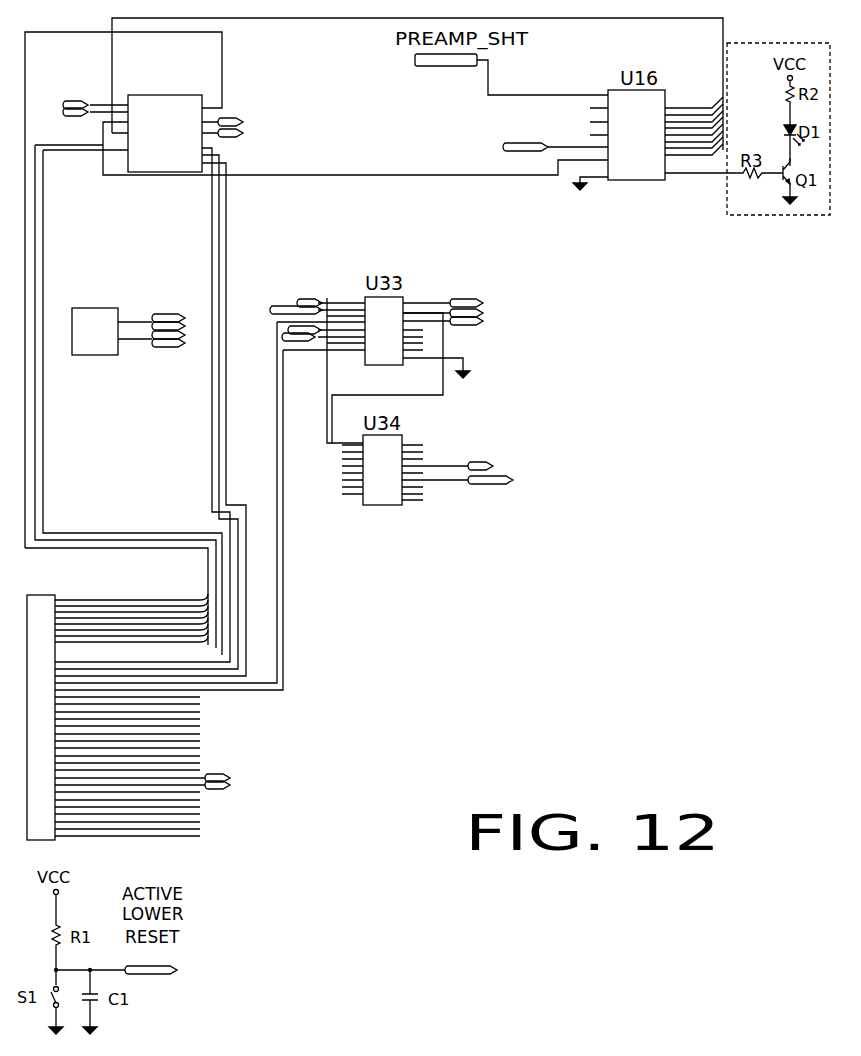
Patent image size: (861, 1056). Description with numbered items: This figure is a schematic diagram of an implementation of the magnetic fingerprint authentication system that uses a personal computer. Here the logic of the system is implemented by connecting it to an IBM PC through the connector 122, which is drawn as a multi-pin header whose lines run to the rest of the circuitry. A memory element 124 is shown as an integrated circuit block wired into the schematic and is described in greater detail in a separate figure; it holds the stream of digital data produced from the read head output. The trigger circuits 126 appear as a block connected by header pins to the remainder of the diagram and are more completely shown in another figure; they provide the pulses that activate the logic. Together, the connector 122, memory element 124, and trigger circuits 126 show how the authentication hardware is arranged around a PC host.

The connector 122 is at (40, 628).
The memory element 124 is at (196, 110).
The trigger circuits 126 is at (92, 345).